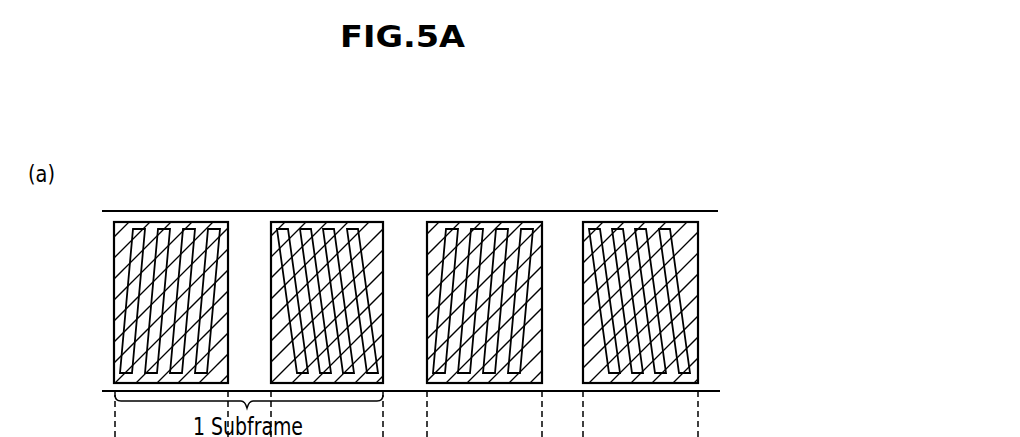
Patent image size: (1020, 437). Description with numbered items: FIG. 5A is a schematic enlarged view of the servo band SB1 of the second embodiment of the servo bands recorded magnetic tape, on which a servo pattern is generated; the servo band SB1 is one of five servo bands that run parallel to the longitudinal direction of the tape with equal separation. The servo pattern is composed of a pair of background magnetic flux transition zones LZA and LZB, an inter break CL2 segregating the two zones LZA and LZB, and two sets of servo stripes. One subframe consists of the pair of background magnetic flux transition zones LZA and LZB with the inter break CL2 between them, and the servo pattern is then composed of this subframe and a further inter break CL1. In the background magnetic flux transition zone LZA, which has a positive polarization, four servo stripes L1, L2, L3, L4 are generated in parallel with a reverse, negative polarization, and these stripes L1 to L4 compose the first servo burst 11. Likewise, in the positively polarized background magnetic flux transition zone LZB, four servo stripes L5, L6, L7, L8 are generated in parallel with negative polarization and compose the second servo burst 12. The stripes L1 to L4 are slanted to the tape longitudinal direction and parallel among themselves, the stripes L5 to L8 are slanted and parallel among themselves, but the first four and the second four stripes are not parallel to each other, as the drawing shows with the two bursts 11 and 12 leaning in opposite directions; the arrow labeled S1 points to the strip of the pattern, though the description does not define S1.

The first servo burst 11 is at (223, 216).
The second servo burst 12 is at (272, 216).
The servo stripe L1 is at (143, 271).
The servo stripe L2 is at (138, 304).
The servo stripe L3 is at (143, 335).
The servo stripe L4 is at (140, 370).
The servo stripe L5 is at (287, 271).
The servo stripe L6 is at (313, 312).
The servo stripe L7 is at (340, 348).
The servo stripe L8 is at (370, 313).
The background magnetic flux transition zone LZA is at (130, 230).
The background magnetic flux transition zone LZB is at (362, 230).
The inter break CL1 is at (401, 227).
The inter break CL2 is at (252, 227).
The servo band SB1 is at (710, 230).
The strip S1 is at (706, 283).